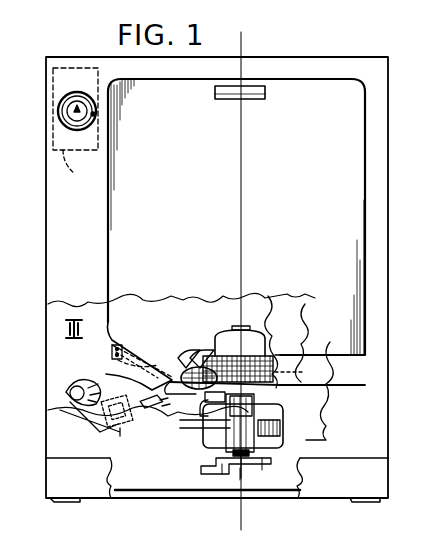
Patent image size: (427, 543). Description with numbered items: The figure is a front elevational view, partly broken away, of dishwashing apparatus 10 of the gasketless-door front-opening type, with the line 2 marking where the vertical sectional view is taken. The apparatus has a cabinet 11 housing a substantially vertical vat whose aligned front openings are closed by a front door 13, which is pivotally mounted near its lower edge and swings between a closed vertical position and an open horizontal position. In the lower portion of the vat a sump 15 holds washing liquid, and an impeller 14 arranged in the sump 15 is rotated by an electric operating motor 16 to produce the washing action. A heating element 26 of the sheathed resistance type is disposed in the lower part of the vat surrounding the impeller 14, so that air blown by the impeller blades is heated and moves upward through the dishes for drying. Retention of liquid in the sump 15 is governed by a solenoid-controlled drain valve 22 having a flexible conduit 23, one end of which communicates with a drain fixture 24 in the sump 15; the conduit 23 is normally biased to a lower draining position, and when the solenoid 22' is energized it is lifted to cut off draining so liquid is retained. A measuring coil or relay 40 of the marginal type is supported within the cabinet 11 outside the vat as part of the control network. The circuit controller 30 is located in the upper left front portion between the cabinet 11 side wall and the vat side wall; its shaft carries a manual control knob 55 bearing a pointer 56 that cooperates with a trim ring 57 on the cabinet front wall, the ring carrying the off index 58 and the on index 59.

The section line 2 is at (238, 43).
The dishwashing apparatus 10 is at (305, 49).
The cabinet 11 is at (388, 208).
The front door 13 is at (350, 175).
The impeller 14 is at (250, 350).
The sump 15 is at (312, 386).
The electric operating motor 16 is at (272, 452).
The drain valve 22 is at (120, 356).
The solenoid 22' is at (115, 421).
The flexible conduit 23 is at (68, 394).
The drain fixture 24 is at (200, 430).
The heating element 26 is at (194, 350).
The circuit controller 30 is at (75, 131).
The measuring coil 40 is at (75, 318).
The manual control knob 55 is at (88, 122).
The pointer 56 is at (70, 110).
The trim ring 57 is at (64, 94).
The off index 58 is at (79, 104).
The on index 59 is at (95, 114).